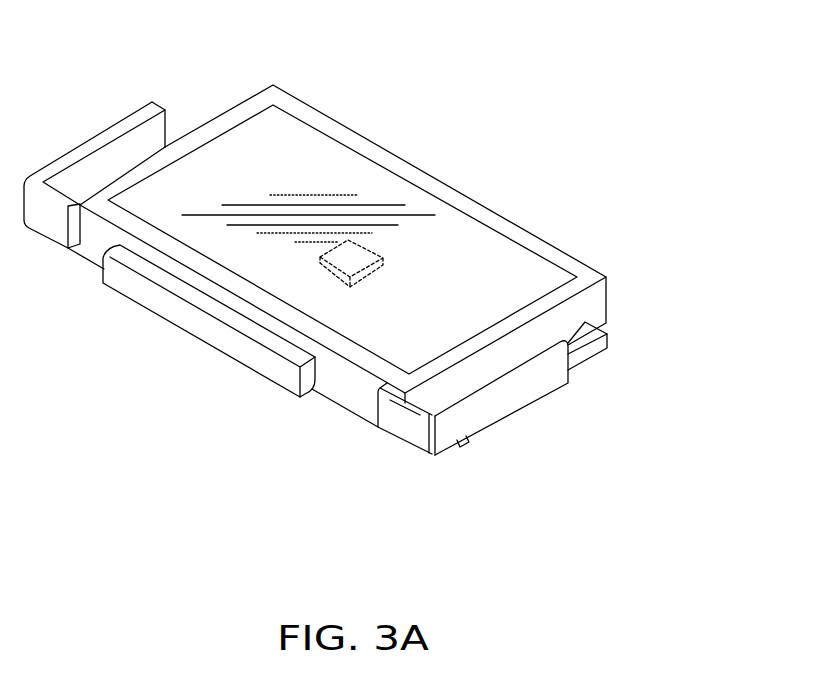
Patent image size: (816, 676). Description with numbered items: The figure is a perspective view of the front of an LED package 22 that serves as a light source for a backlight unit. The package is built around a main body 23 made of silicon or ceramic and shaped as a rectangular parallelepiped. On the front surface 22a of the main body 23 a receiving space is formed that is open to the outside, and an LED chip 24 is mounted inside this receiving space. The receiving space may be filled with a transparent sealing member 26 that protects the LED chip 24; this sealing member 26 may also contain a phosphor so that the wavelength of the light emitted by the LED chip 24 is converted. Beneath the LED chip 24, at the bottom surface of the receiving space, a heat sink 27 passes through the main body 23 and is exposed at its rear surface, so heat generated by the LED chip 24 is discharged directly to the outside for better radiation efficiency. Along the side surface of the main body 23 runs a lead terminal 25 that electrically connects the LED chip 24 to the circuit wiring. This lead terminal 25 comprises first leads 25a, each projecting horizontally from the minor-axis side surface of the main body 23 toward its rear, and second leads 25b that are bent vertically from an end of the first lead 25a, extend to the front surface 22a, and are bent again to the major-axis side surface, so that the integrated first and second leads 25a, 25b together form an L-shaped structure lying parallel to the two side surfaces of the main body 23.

The LED package 22 is at (128, 78).
The front surface 22a is at (248, 155).
The main body 23 is at (593, 305).
The LED chip 24 is at (357, 255).
The lead terminal 25 is at (504, 459).
The first lead 25a is at (583, 357).
The second lead 25b is at (458, 466).
The sealing member 26 is at (397, 332).
The heat sink 27 is at (222, 351).